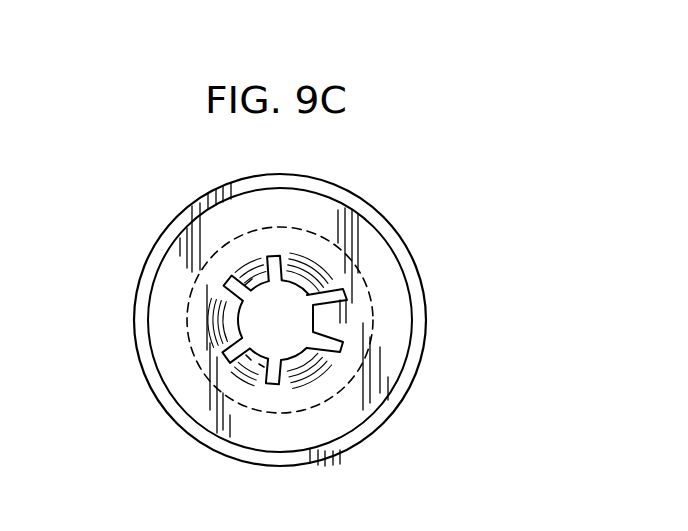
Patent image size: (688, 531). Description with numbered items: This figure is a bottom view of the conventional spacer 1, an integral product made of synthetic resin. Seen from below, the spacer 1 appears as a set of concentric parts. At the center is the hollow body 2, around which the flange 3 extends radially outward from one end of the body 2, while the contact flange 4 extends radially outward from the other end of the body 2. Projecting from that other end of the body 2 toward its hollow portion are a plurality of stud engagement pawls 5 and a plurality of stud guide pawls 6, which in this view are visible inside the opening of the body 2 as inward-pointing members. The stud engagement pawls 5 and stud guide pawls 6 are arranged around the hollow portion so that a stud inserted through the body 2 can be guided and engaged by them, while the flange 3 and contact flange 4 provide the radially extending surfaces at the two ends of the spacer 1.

The spacer 1 is at (398, 215).
The hollow body 2 is at (290, 398).
The flange 3 is at (405, 255).
The contact flange 4 is at (390, 347).
The stud engagement pawls 5 is at (325, 318).
The stud guide pawls 6 is at (240, 318).